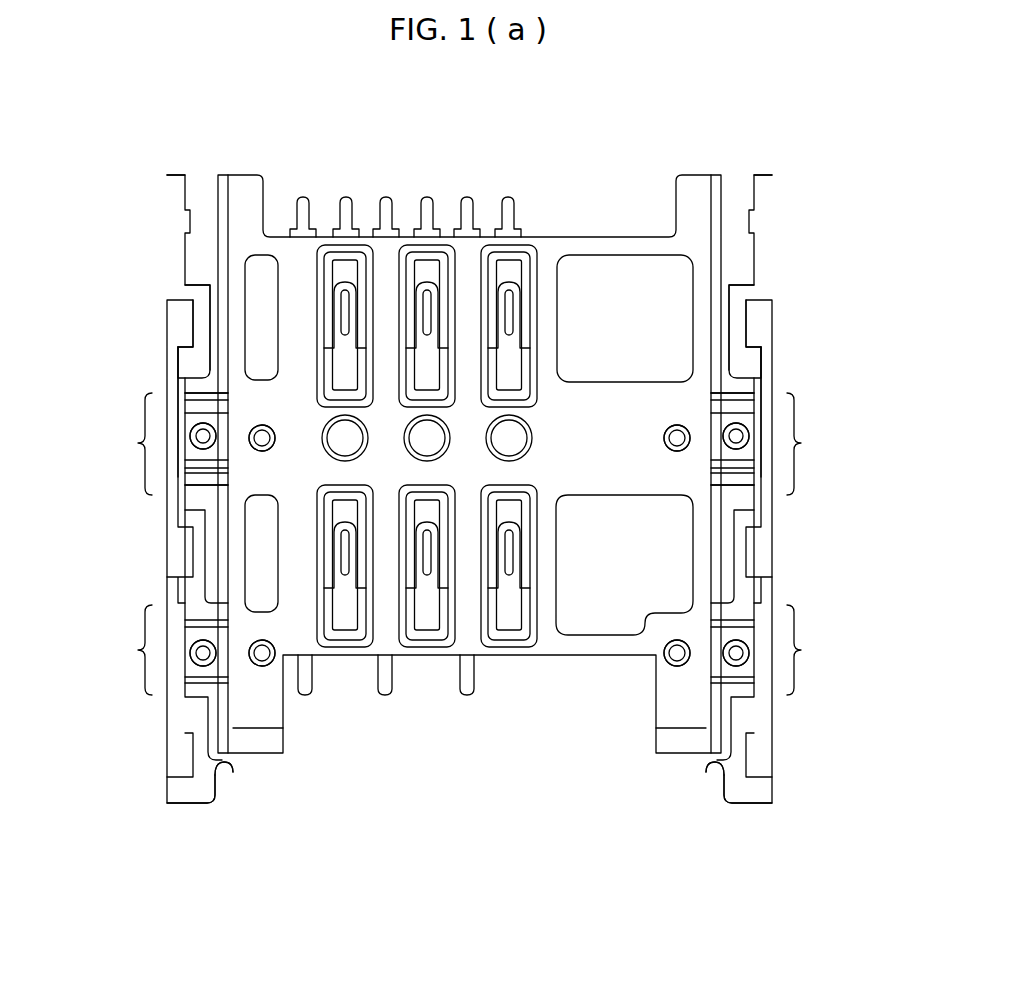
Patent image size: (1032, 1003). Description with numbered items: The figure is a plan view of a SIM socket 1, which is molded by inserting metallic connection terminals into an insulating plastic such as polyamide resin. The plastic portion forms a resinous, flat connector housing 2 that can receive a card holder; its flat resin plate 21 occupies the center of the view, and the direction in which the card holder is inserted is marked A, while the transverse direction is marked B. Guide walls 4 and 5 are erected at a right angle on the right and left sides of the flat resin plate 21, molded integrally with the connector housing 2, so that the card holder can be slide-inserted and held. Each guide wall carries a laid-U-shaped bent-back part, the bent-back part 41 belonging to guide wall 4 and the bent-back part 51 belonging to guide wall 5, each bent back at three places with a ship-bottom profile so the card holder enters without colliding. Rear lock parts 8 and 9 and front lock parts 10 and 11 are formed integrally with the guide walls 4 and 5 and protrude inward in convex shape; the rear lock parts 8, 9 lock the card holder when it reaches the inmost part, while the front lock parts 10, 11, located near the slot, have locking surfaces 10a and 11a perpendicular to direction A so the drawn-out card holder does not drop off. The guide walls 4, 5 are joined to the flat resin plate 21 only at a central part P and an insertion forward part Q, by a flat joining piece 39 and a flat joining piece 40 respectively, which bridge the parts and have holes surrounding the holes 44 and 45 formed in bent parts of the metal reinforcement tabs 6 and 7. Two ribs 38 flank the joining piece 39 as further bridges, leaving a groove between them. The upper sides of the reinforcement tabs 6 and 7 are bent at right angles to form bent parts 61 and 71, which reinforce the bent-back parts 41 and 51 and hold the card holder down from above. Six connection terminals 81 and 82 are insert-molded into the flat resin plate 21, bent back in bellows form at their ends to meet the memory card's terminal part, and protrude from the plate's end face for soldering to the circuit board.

The SIM socket 1 is at (726, 124).
The connector housing 2 is at (541, 235).
The flat resin plate 21 is at (575, 400).
The guide wall 4 is at (156, 526).
The guide wall 5 is at (783, 526).
The reinforcement tab 6 is at (175, 478).
The reinforcement tab 7 is at (765, 355).
The rear lock part 8 is at (185, 222).
The rear lock part 9 is at (754, 222).
The front lock part 10 is at (213, 785).
The locking surface 10a is at (233, 772).
The front lock part 11 is at (726, 785).
The locking surface 11a is at (706, 772).
The rib 38 is at (202, 402).
The joining piece 39 is at (222, 450).
The joining piece 40 is at (222, 668).
The bent-back part 41 is at (196, 318).
The hole 44 is at (205, 436).
The hole 45 is at (204, 655).
The bent-back part 51 is at (743, 318).
The bent part 61 is at (178, 320).
The bent part 71 is at (761, 320).
The connection terminal 81 is at (509, 292).
The connection terminal 82 is at (504, 603).
The insertion direction A is at (474, 790).
The direction B is at (258, 147).
The central part P is at (467, 444).
The insertion forward part Q is at (468, 650).